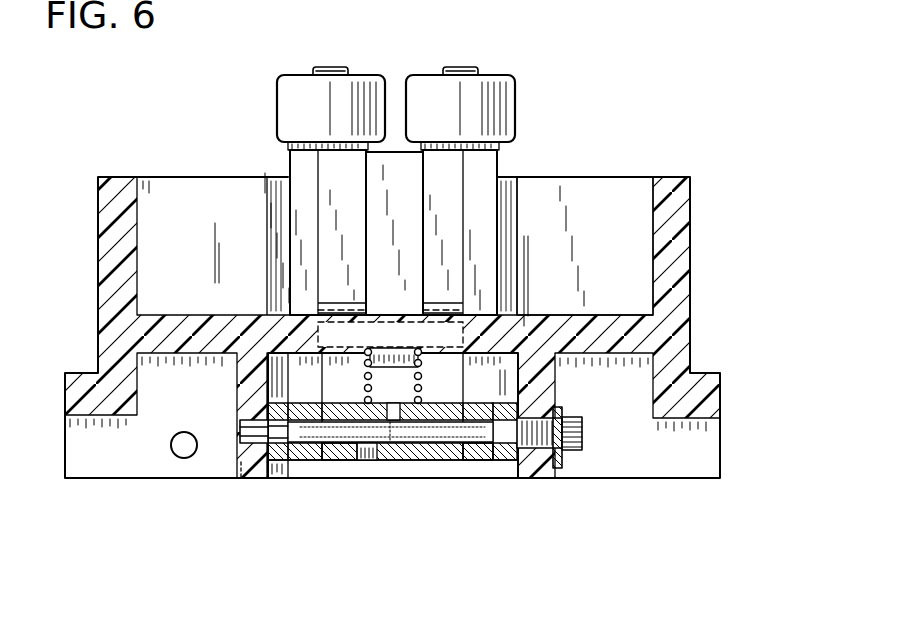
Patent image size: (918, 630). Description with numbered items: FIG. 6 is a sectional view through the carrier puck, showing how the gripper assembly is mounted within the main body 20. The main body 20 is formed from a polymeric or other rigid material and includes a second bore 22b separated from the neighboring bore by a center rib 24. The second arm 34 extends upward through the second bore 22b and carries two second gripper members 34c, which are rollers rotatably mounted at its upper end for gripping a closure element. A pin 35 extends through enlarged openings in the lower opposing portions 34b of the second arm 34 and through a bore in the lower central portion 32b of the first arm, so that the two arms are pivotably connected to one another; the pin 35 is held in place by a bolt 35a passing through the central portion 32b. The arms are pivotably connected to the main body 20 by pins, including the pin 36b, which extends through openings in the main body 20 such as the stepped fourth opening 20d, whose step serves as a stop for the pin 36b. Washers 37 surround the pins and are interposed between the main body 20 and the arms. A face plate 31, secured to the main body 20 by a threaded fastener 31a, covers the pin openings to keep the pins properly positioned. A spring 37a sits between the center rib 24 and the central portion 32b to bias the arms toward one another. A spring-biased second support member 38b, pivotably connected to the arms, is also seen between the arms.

The main body 20 is at (680, 265).
The fourth opening 20d is at (241, 483).
The second bore 22b is at (514, 230).
The center rib 24 is at (310, 337).
The face plate 31 is at (577, 463).
The threaded fastener 31a is at (563, 466).
The lower central portion 32b is at (433, 481).
The second arm 34 is at (452, 170).
The lower opposing portions 34b is at (313, 481).
The second gripper members 34c is at (300, 92).
The pin 35 is at (352, 434).
The bolt 35a is at (392, 462).
The pin 36b is at (258, 481).
The washers 37 is at (282, 481).
The spring 37a is at (364, 388).
The second support member 38b is at (396, 160).